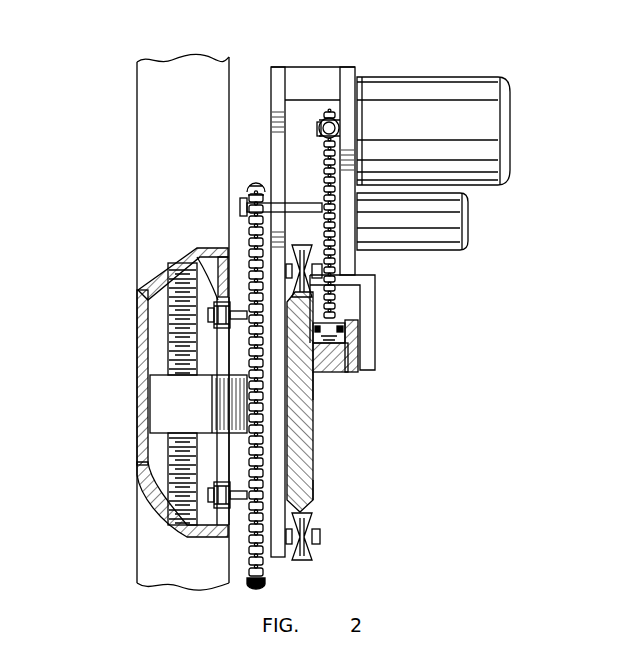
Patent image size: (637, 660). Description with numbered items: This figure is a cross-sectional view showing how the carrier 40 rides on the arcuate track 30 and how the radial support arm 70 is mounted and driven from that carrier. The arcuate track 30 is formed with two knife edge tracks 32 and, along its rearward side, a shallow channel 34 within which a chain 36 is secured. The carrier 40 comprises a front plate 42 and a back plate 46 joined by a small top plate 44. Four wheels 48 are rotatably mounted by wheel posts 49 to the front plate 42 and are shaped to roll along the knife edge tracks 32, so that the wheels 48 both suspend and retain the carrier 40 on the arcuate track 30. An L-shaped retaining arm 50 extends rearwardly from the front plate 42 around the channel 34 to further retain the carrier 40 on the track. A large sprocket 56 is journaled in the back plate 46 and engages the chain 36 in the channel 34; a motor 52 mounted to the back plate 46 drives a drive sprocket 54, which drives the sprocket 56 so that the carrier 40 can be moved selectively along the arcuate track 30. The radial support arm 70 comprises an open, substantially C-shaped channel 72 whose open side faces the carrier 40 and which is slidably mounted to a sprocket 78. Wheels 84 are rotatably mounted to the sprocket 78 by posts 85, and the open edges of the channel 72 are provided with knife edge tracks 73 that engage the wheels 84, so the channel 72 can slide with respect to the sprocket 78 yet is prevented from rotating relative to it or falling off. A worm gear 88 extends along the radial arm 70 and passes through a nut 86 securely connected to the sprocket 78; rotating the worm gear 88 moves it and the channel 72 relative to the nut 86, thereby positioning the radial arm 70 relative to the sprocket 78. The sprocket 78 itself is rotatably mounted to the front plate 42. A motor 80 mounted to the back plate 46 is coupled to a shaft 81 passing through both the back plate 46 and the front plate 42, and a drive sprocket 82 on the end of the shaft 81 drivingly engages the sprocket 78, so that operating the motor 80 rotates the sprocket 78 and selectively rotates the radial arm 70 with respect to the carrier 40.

The arcuate track 30 is at (326, 452).
The knife edge tracks 32 is at (318, 372).
The shallow channel 34 is at (335, 357).
The chain 36 is at (345, 330).
The carrier 40 is at (338, 55).
The front plate 42 is at (277, 85).
The top plate 44 is at (312, 85).
The back plate 46 is at (348, 78).
The wheels 48 is at (298, 262).
The wheel posts 49 is at (322, 268).
The L-shaped retaining arm 50 is at (373, 310).
The motor 52 is at (482, 130).
The drive sprocket 54 is at (336, 118).
The large sprocket 56 is at (340, 212).
The radial support arm 70 is at (100, 157).
The C-shaped channel 72 is at (158, 108).
The knife edge tracks 73 is at (220, 255).
The sprocket 78 is at (255, 590).
The motor 80 is at (445, 225).
The shaft 81 is at (310, 205).
The drive sprocket 82 is at (258, 180).
The wheels 84 is at (212, 262).
The posts 85 is at (210, 315).
The nut 86 is at (175, 408).
The worm gear 88 is at (178, 298).